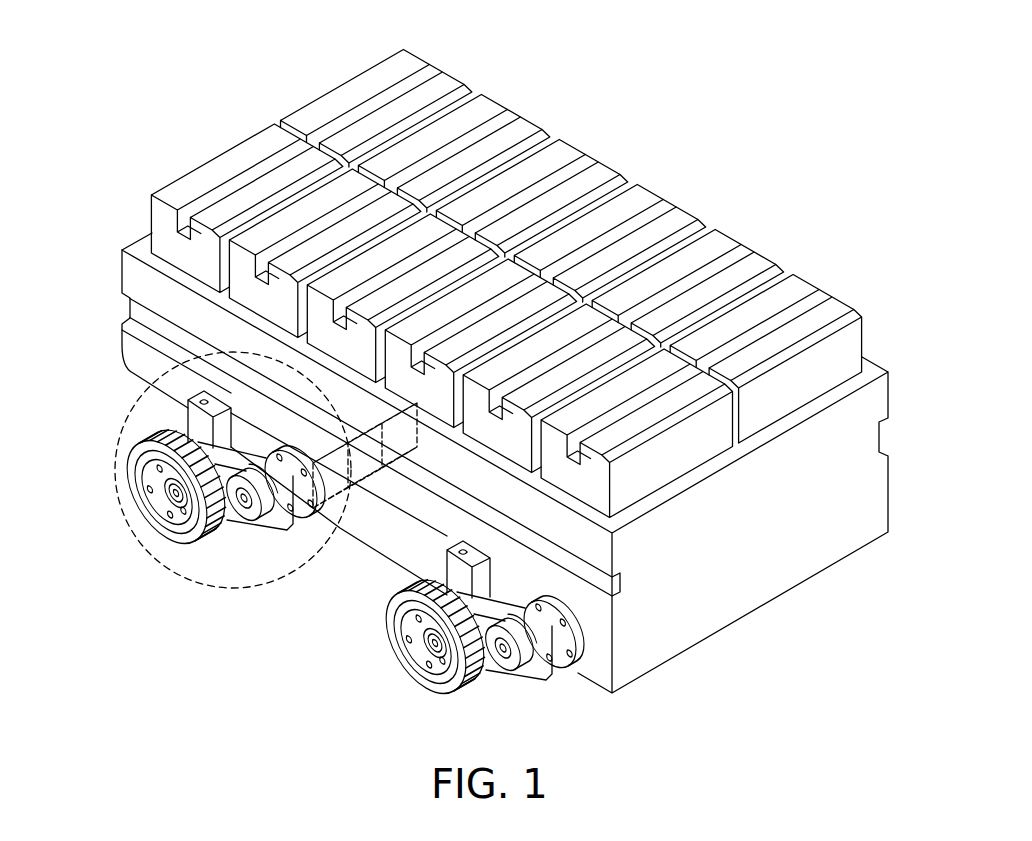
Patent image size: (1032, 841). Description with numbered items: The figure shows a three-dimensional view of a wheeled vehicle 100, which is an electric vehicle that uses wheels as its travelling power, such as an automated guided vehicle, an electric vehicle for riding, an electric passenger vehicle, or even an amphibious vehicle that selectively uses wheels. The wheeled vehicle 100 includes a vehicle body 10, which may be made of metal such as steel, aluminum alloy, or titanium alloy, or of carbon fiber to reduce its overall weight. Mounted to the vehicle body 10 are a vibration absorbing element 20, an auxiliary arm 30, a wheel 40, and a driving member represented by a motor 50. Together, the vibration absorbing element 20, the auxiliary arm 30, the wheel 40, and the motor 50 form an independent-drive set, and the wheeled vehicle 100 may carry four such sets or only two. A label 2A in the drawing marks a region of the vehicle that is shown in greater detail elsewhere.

The wheeled vehicle 100 is at (871, 85).
The vehicle body 10 is at (140, 352).
The vibration absorbing element 20 is at (185, 420).
The auxiliary arm 30 is at (291, 517).
The wheel 40 is at (130, 467).
The motor 50 is at (336, 510).
The detail region of FIG. 2A is at (150, 538).